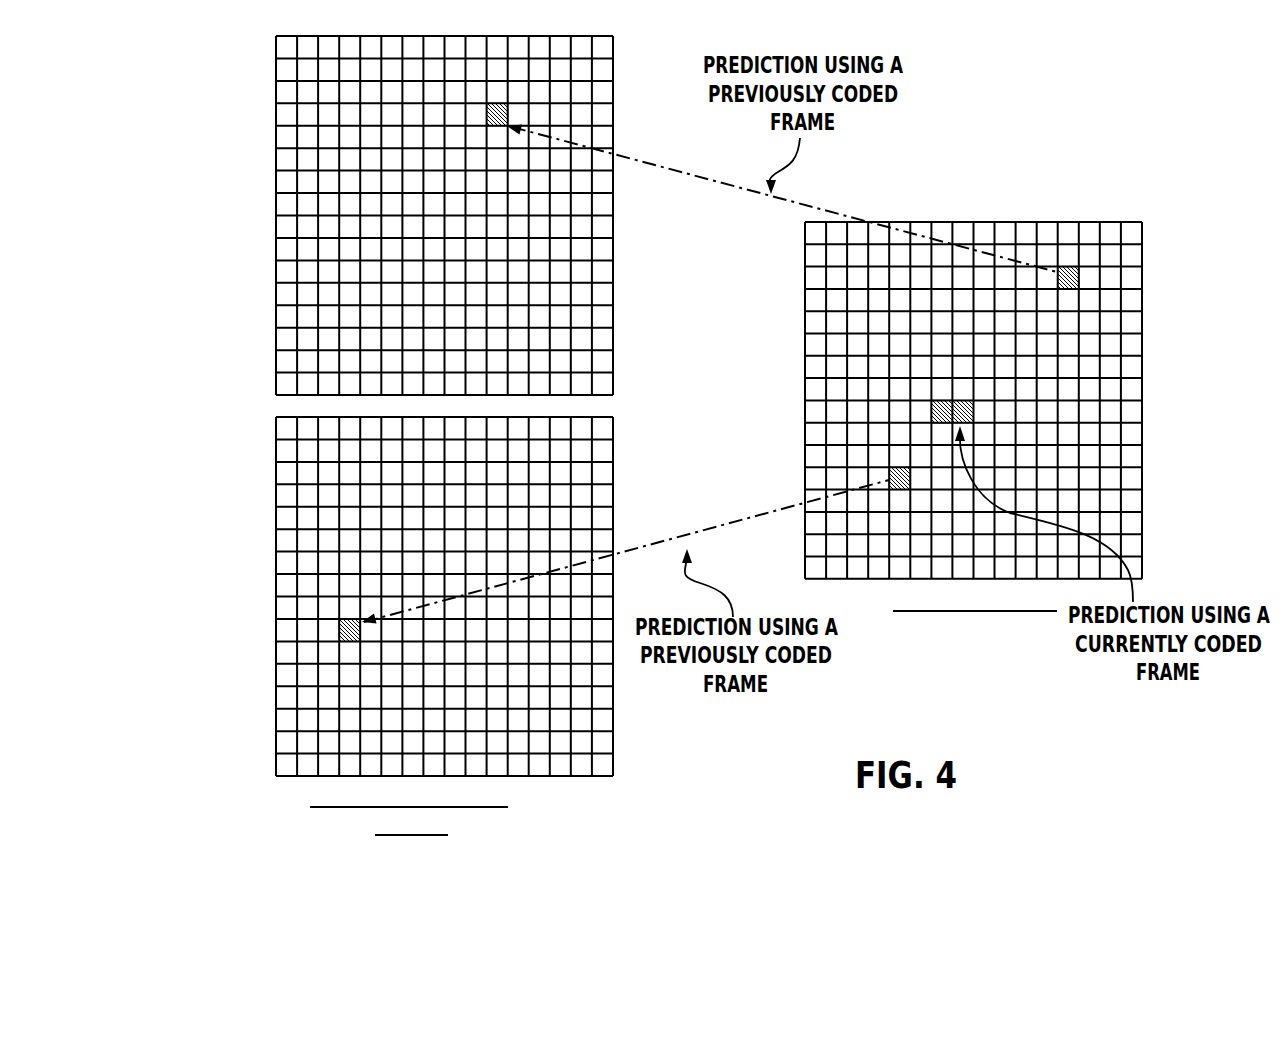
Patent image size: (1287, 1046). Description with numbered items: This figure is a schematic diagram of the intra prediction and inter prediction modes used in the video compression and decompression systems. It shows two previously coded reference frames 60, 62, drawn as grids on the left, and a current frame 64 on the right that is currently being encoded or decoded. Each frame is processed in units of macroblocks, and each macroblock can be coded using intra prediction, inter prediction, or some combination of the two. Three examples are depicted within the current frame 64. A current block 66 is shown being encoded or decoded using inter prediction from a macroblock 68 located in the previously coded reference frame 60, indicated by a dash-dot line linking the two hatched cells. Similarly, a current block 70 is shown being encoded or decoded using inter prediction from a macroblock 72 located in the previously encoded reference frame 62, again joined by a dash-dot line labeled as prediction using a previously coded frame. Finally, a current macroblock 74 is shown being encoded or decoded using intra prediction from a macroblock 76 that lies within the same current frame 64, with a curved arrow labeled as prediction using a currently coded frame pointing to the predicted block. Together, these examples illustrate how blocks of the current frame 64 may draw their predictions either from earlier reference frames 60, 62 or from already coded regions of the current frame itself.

The reference frame 60 is at (250, 71).
The reference frame 62 is at (250, 451).
The current frame 64 is at (1156, 559).
The current block 66 is at (1078, 276).
The macroblock 68 is at (494, 104).
The current block 70 is at (901, 490).
The macroblock 72 is at (343, 622).
The current macroblock 74 is at (975, 406).
The macroblock 76 is at (940, 400).